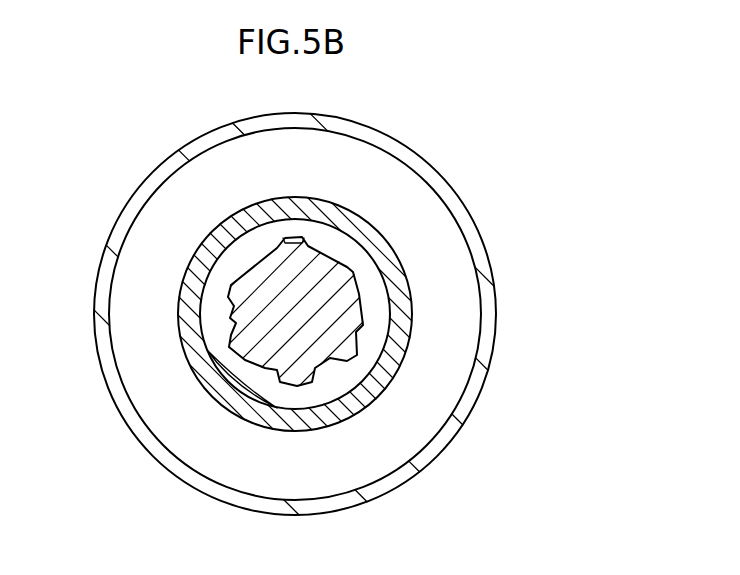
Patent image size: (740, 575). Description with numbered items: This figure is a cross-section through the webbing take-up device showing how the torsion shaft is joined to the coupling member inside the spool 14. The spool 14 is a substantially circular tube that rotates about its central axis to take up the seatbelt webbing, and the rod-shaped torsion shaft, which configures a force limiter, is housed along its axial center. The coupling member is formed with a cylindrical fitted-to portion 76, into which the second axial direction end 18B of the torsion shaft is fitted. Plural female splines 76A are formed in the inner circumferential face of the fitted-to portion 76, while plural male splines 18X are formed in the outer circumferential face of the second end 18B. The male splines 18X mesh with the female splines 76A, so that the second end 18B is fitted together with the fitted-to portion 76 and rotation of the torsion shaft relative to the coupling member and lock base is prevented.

The spool 14 is at (488, 374).
The fitted-to portion 76 is at (392, 293).
The female splines 76A is at (298, 242).
The second axial direction end 18B is at (324, 255).
The male splines 18X is at (228, 303).